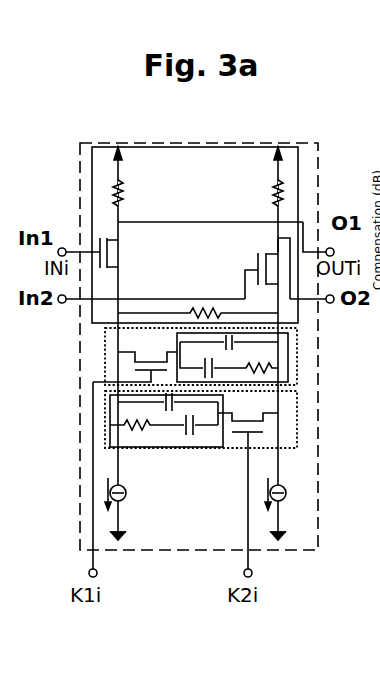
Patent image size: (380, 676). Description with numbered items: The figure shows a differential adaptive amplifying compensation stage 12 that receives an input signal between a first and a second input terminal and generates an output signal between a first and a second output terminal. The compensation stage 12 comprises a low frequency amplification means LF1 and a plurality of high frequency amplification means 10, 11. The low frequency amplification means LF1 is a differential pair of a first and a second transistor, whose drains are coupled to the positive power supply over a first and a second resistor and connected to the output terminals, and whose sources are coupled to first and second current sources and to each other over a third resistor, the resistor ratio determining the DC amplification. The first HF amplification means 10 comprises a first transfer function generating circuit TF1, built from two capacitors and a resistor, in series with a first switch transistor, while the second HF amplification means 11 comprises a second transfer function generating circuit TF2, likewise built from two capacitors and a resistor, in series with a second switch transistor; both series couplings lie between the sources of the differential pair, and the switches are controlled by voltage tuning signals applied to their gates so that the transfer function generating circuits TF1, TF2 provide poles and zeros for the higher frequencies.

The first HF amplification means 10 is at (297, 373).
The second HF amplification means 11 is at (297, 430).
The differential adaptive amplifying compensation stage 12 is at (318, 528).
The low frequency amplification means LF1 is at (298, 173).
The first transfer function generating circuit TF1 is at (288, 350).
The second transfer function generating circuit TF2 is at (110, 425).